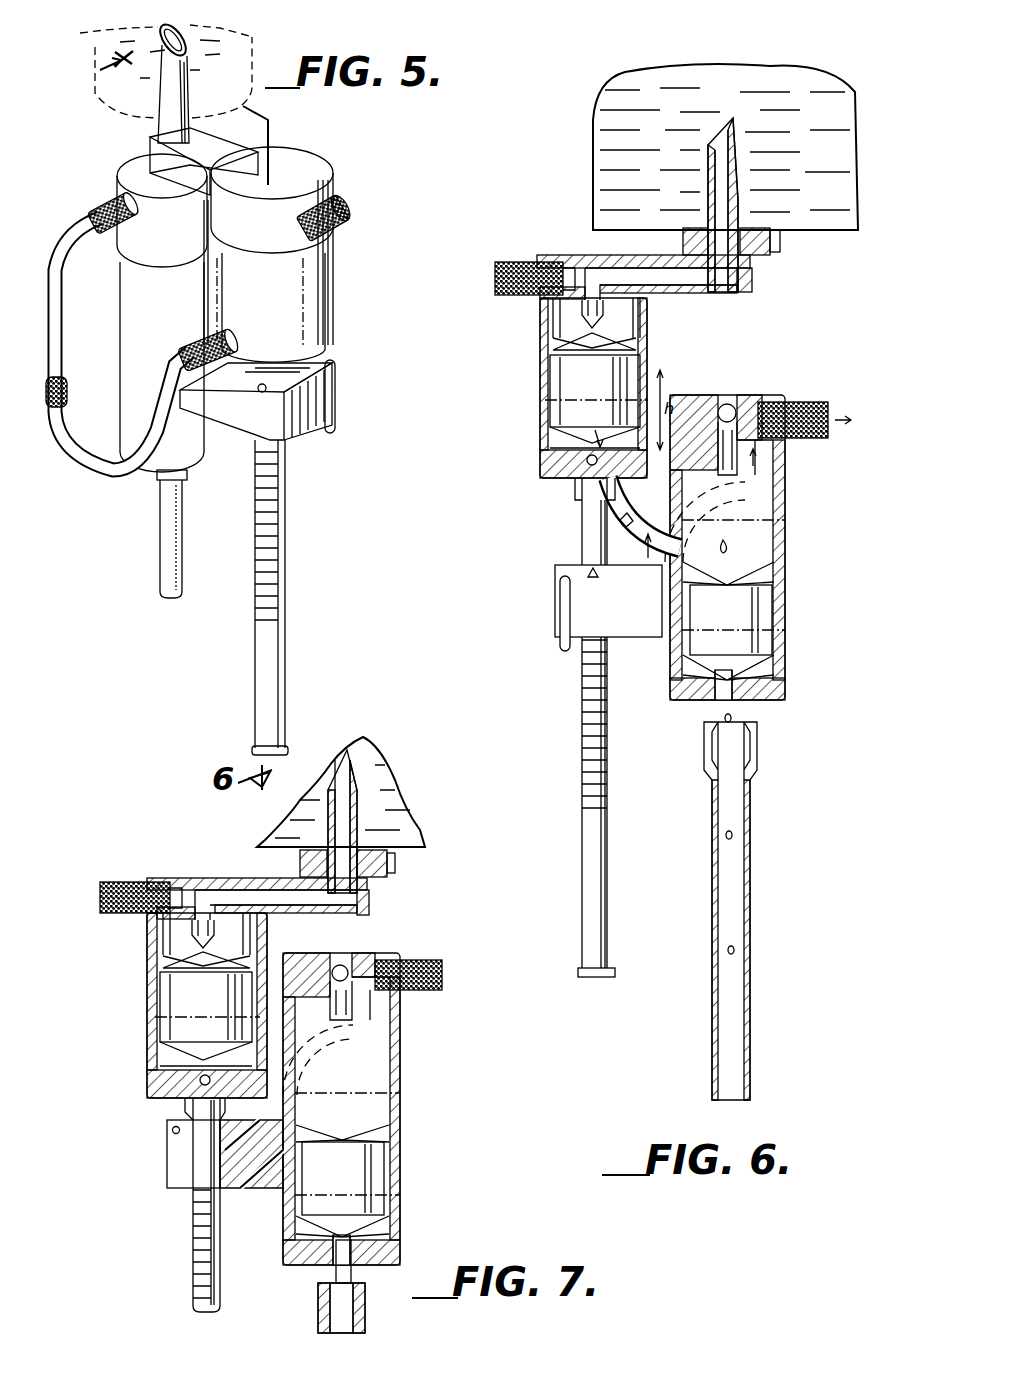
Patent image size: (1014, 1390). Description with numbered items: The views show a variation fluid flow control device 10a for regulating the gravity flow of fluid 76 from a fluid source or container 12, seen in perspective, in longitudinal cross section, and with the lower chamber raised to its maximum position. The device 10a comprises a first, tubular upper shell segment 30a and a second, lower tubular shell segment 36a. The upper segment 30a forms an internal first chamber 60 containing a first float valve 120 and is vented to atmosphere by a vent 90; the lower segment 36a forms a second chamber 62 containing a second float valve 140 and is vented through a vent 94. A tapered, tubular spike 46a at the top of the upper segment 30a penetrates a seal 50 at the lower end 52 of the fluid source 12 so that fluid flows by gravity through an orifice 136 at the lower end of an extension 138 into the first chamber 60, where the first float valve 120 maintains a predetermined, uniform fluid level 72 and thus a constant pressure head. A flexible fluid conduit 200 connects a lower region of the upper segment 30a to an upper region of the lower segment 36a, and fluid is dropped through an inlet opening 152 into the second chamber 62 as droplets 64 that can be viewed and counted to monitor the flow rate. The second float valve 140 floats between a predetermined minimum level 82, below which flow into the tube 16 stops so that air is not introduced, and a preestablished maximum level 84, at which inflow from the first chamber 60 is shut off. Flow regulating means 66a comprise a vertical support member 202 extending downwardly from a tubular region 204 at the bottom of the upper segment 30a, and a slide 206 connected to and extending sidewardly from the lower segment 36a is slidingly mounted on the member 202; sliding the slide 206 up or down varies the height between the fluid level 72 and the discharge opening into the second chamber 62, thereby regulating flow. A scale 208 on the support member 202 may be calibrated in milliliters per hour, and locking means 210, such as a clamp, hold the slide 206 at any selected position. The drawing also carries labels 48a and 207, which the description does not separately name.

In FIG. 5, the variation fluid flow control device 10a is at (150, 577).
In FIG. 5, the fluid container 12 is at (96, 74).
In FIG. 5, the tube 16 is at (160, 538).
In FIG. 6, the tube 16 is at (712, 1042).
In FIG. 7, the tube 16 is at (365, 1310).
In FIG. 5, the upper shell segment 30a is at (333, 176).
In FIG. 6, the upper shell segment 30a is at (540, 432).
In FIG. 7, the upper shell segment 30a is at (147, 1050).
In FIG. 5, the lower shell segment 36a is at (118, 325).
In FIG. 6, the lower shell segment 36a is at (786, 655).
In FIG. 7, the lower shell segment 36a is at (341, 1109).
In FIG. 5, the spike 46a is at (160, 128).
In FIG. 6, the spike 46a is at (739, 178).
In FIG. 7, the spike 46a is at (360, 775).
In FIG. 5, the spike tip 48a is at (188, 26).
In FIG. 6, the spike tip 48a is at (732, 120).
In FIG. 7, the spike tip 48a is at (350, 752).
In FIG. 6, the seal 50 is at (702, 228).
In FIG. 7, the seal 50 is at (370, 850).
In FIG. 6, the lower end 52 is at (780, 240).
In FIG. 7, the lower end 52 is at (395, 862).
In FIG. 6, the first chamber 60 is at (633, 315).
In FIG. 7, the first chamber 60 is at (170, 952).
In FIG. 6, the second chamber 62 is at (760, 570).
In FIG. 7, the second chamber 62 is at (375, 1125).
In FIG. 6, the droplets 64 is at (735, 546).
In FIG. 6, the flow regulating means 66a is at (560, 650).
In FIG. 6, the fluid level 72 is at (549, 398).
In FIG. 7, the fluid level 72 is at (160, 1015).
In FIG. 5, the fluid 76 is at (120, 33).
In FIG. 6, the minimum level 82 is at (766, 632).
In FIG. 7, the minimum level 82 is at (380, 1200).
In FIG. 6, the maximum level 84 is at (775, 516).
In FIG. 7, the maximum level 84 is at (395, 1090).
In FIG. 5, the vent 90 is at (345, 205).
In FIG. 6, the vent 90 is at (520, 262).
In FIG. 7, the vent 90 is at (130, 882).
In FIG. 6, the vent 94 is at (808, 402).
In FIG. 7, the vent 94 is at (425, 960).
In FIG. 6, the first float valve 120 is at (558, 375).
In FIG. 7, the first float valve 120 is at (160, 993).
In FIG. 6, the orifice 136 is at (605, 346).
In FIG. 7, the orifice 136 is at (215, 952).
In FIG. 6, the extension 138 is at (582, 318).
In FIG. 7, the extension 138 is at (192, 940).
In FIG. 6, the second float valve 140 is at (760, 608).
In FIG. 7, the second float valve 140 is at (380, 1160).
In FIG. 6, the inlet orifice 152 is at (740, 478).
In FIG. 7, the inlet orifice 152 is at (365, 1030).
In FIG. 5, the flexible fluid conduit 200 is at (90, 452).
In FIG. 6, the flexible fluid conduit 200 is at (664, 522).
In FIG. 7, the flexible fluid conduit 200 is at (390, 1072).
In FIG. 5, the vertical support member 202 is at (285, 640).
In FIG. 6, the vertical support member 202 is at (582, 535).
In FIG. 7, the vertical support member 202 is at (193, 1256).
In FIG. 6, the tubular region 204 is at (575, 488).
In FIG. 7, the tubular region 204 is at (185, 1105).
In FIG. 5, the slide 206 is at (253, 440).
In FIG. 6, the slide 206 is at (555, 598).
In FIG. 7, the slide 206 is at (248, 1190).
In FIG. 5, the tube fitting 207 is at (50, 393).
In FIG. 6, the tube fitting 207 is at (612, 518).
In FIG. 5, the scale 208 is at (285, 550).
In FIG. 6, the scale 208 is at (582, 710).
In FIG. 7, the scale 208 is at (193, 1296).
In FIG. 5, the locking means 210 is at (338, 397).
In FIG. 6, the locking means 210 is at (560, 620).
In FIG. 7, the locking means 210 is at (170, 1130).